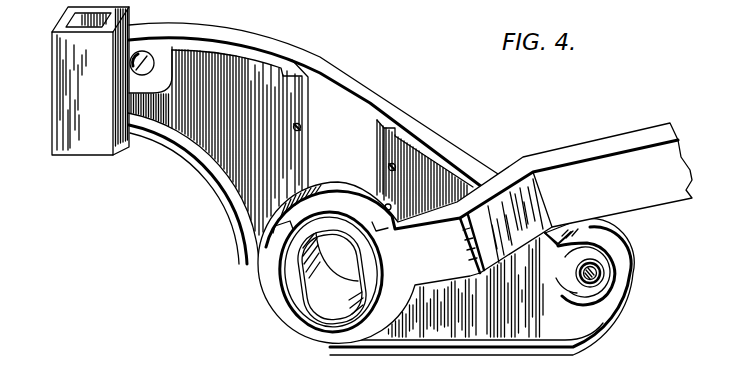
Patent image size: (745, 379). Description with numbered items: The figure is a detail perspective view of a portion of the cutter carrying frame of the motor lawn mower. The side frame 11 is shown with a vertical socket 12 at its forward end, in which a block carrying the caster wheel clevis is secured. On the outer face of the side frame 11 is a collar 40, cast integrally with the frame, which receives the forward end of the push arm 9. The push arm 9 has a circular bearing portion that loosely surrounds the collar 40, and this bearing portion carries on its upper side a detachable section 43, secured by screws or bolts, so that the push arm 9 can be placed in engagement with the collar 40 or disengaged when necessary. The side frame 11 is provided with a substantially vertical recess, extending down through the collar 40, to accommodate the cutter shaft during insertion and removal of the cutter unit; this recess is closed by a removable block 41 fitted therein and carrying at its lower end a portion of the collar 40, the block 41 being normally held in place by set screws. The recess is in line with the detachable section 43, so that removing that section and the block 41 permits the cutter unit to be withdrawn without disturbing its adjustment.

The push arm 9 is at (437, 220).
The side frame 11 is at (381, 177).
The vertical socket 12 is at (63, 107).
The collar 40 is at (310, 318).
The removable block 41 is at (356, 79).
The detachable section 43 is at (293, 203).